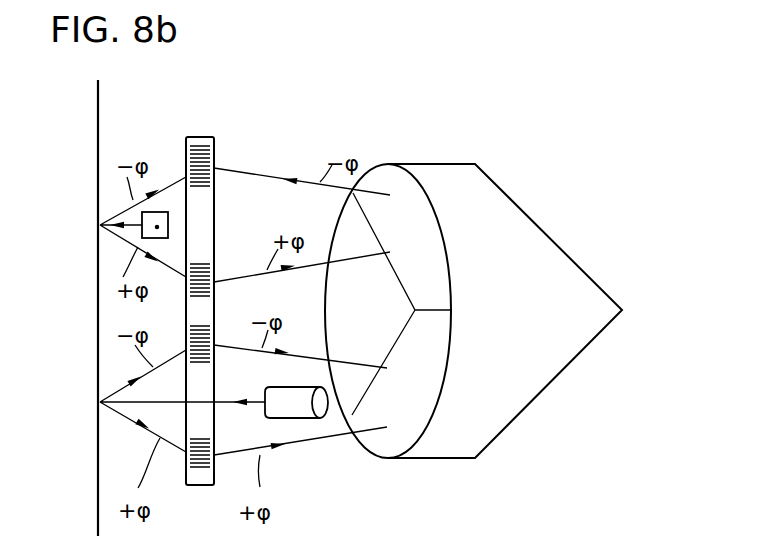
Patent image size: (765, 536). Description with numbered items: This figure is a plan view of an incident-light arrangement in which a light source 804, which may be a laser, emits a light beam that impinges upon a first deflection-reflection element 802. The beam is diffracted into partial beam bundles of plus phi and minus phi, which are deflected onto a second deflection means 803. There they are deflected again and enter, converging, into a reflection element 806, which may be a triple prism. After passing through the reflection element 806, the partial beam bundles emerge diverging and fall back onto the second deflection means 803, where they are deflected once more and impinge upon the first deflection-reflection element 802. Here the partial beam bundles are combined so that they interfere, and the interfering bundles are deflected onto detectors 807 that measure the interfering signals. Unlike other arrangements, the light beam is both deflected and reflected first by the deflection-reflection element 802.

The first deflection-reflection element 802 is at (99, 112).
The second deflection means 803 is at (203, 142).
The light source 804 is at (303, 404).
The reflection element 806 is at (473, 311).
The detectors 807 is at (157, 227).